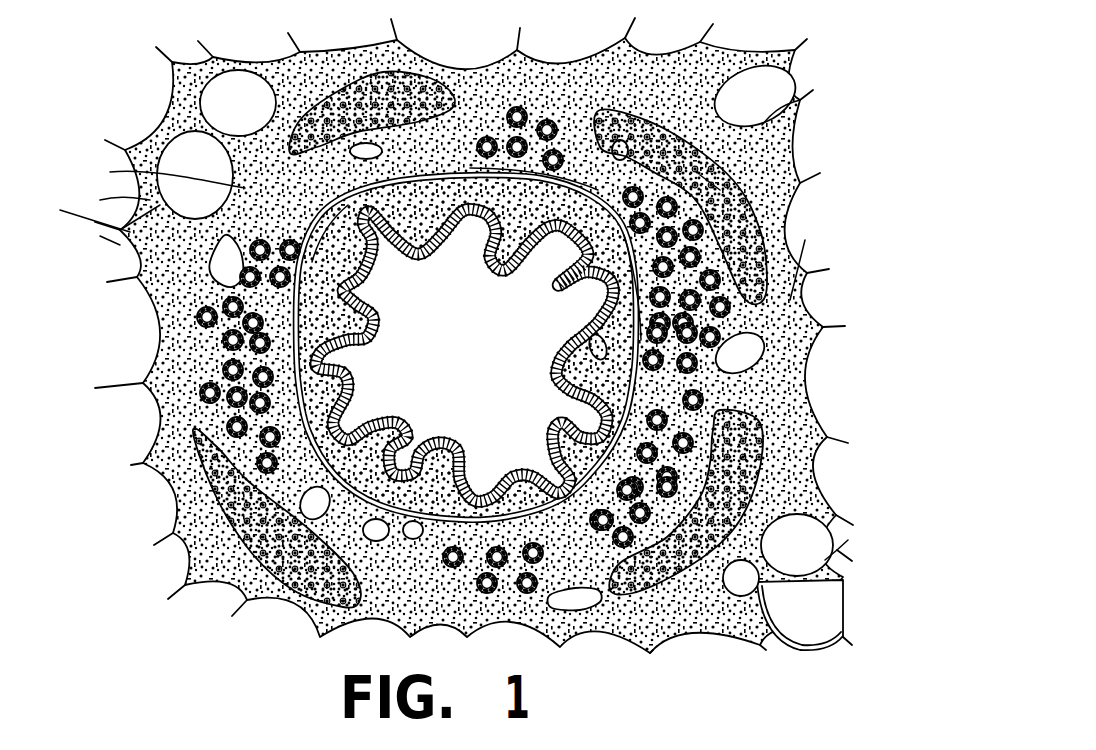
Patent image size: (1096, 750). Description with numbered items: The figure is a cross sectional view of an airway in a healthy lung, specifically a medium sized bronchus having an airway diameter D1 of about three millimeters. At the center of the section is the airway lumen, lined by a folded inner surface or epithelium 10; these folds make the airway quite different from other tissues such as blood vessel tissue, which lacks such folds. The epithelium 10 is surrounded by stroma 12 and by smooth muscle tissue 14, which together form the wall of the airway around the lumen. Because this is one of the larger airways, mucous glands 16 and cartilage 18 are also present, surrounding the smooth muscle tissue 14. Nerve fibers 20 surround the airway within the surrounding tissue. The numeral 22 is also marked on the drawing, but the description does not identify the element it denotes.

The epithelium 10 is at (355, 215).
The stroma 12 is at (313, 420).
The smooth muscle tissue 14 is at (310, 293).
The mucous glands 16 is at (203, 317).
The cartilage 18 is at (247, 547).
The nerve fibers 20 is at (190, 352).
The smooth muscle layer 22 is at (327, 238).
The airway diameter D1 is at (567, 407).